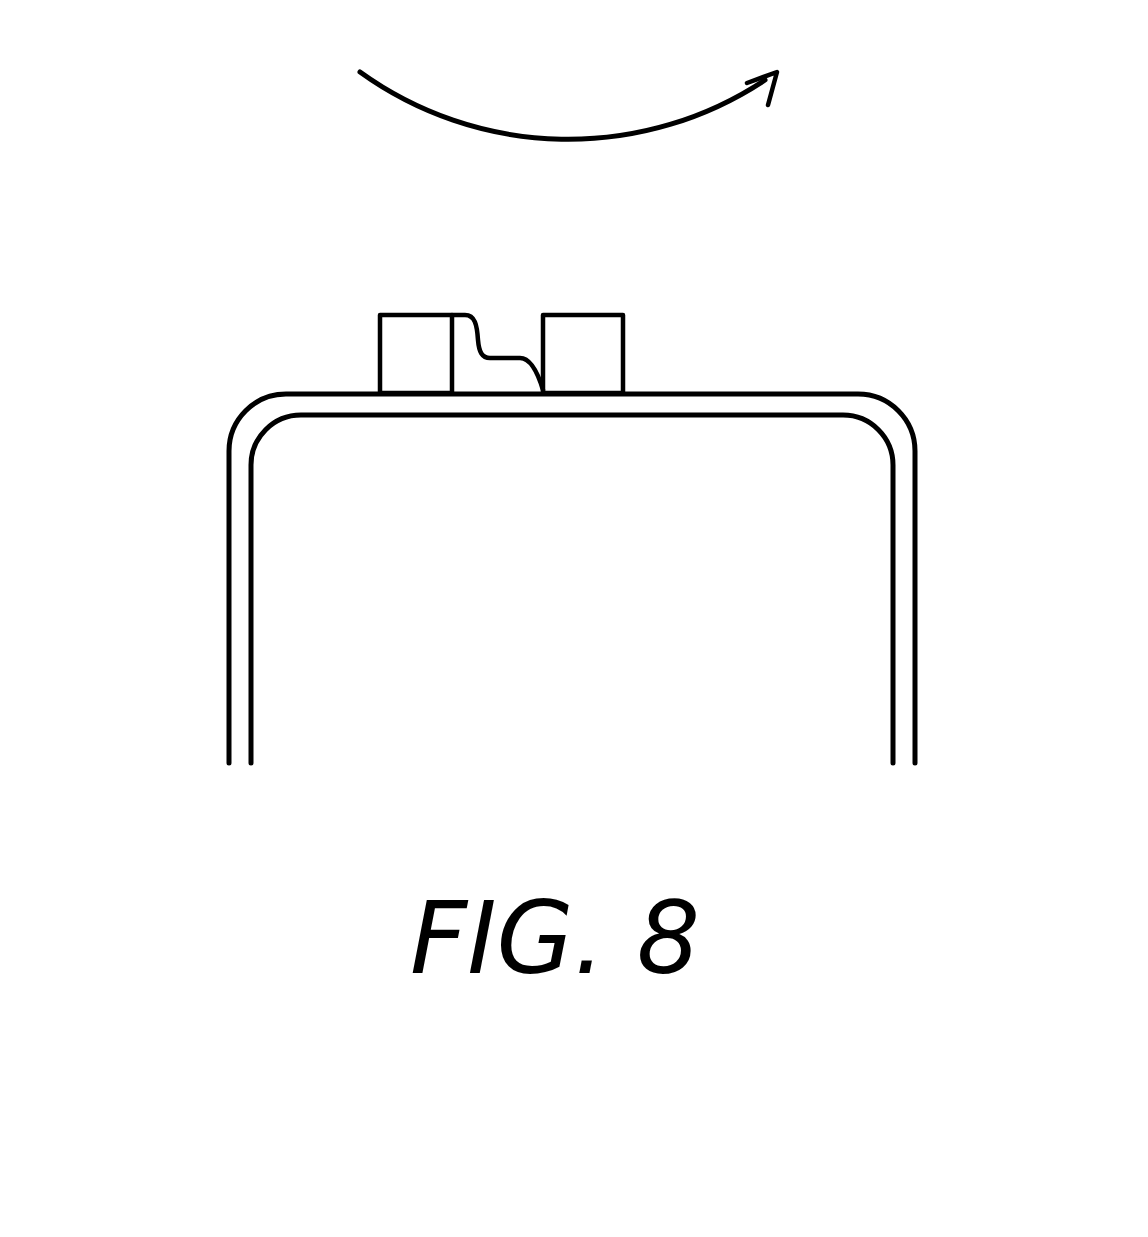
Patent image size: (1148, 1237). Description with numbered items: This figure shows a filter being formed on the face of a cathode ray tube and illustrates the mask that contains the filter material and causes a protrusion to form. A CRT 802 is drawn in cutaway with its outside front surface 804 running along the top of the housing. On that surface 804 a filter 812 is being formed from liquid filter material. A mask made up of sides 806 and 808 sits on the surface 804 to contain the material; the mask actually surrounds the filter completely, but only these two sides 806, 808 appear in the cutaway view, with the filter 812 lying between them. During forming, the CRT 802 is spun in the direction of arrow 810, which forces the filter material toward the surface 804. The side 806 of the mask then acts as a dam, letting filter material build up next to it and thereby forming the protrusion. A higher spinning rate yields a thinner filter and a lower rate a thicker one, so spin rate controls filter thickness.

The CRT 802 is at (229, 558).
The outside front surface 804 is at (797, 393).
The mask side 806 is at (400, 327).
The mask side 808 is at (612, 350).
The arrow 810 is at (567, 138).
The filter 812 is at (497, 352).